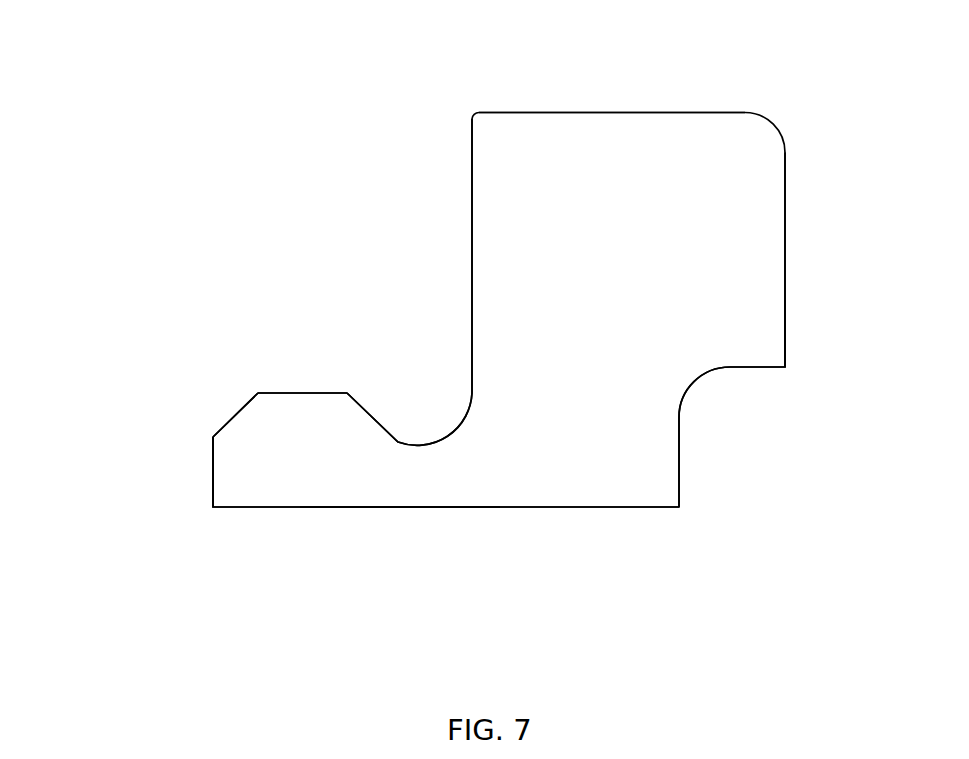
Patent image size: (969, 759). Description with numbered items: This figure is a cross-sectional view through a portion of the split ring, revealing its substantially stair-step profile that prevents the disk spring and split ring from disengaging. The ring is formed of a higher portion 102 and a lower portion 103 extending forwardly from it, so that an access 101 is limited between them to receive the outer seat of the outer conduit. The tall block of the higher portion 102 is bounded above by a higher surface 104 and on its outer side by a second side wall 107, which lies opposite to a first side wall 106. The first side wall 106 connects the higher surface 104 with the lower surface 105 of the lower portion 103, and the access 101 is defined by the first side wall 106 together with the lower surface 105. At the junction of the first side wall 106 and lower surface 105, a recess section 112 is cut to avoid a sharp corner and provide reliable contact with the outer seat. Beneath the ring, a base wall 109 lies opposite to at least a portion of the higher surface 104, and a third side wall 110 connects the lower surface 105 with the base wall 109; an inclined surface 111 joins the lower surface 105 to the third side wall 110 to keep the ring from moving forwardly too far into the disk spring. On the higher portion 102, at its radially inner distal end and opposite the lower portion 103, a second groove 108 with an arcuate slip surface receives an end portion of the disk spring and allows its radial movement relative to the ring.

The access 101 is at (408, 345).
The higher portion 102 is at (713, 172).
The lower portion 103 is at (257, 457).
The higher surface 104 is at (645, 112).
The lower surface 105 is at (315, 395).
The first side wall 106 is at (473, 285).
The second side wall 107 is at (782, 327).
The second groove 108 is at (688, 397).
The base wall 109 is at (352, 503).
The third side wall 110 is at (213, 473).
The inclined surface 111 is at (230, 420).
The recess section 112 is at (440, 443).